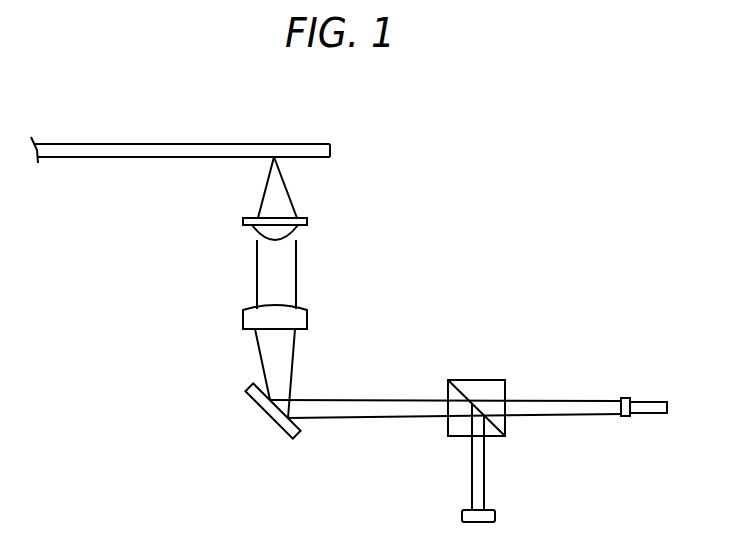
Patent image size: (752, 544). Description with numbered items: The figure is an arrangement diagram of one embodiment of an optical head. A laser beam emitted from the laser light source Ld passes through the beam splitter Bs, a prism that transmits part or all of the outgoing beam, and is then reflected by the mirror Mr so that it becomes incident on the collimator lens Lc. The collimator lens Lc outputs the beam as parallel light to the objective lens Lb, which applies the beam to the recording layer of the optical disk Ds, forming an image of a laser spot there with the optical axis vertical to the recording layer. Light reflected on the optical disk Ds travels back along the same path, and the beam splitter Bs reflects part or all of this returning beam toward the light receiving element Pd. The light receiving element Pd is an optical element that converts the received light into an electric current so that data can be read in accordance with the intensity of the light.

The optical disk Ds is at (235, 152).
The objective lens Lb is at (267, 229).
The collimator lens Lc is at (258, 320).
The mirror Mr is at (270, 410).
The beam splitter Bs is at (487, 388).
The light receiving element Pd is at (495, 514).
The laser light source Ld is at (650, 407).